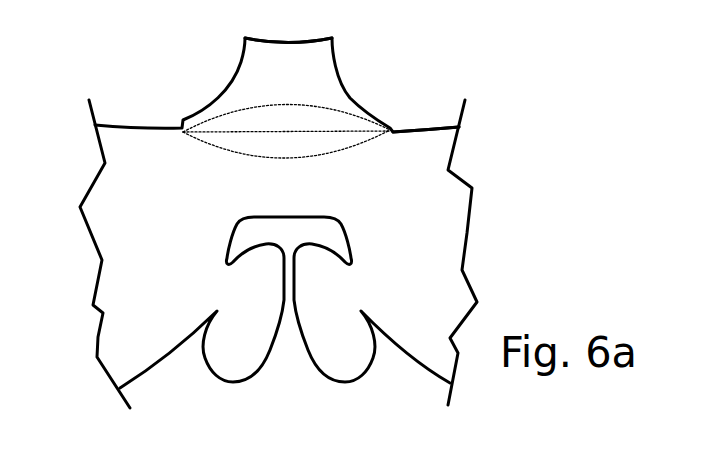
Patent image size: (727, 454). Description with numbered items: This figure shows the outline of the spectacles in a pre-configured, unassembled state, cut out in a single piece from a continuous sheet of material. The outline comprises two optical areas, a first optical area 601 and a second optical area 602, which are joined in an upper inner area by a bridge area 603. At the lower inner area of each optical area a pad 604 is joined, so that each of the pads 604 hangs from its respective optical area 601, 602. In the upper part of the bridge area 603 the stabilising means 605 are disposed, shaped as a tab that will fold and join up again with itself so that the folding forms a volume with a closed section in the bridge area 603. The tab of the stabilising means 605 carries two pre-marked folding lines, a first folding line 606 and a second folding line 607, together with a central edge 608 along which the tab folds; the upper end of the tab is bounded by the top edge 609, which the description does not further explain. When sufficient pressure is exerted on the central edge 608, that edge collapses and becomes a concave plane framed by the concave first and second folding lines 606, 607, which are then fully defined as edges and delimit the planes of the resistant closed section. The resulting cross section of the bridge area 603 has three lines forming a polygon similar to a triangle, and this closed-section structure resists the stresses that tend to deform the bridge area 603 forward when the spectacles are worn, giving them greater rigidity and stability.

The first optical area 601 is at (437, 257).
The second optical area 602 is at (133, 228).
The bridge area 603 is at (290, 180).
The pads 604 is at (332, 363).
The stabilising means 605 is at (219, 93).
The first folding line 606 is at (273, 155).
The second folding line 607 is at (253, 108).
The central edge 608 is at (253, 133).
The top edge 609 is at (293, 55).